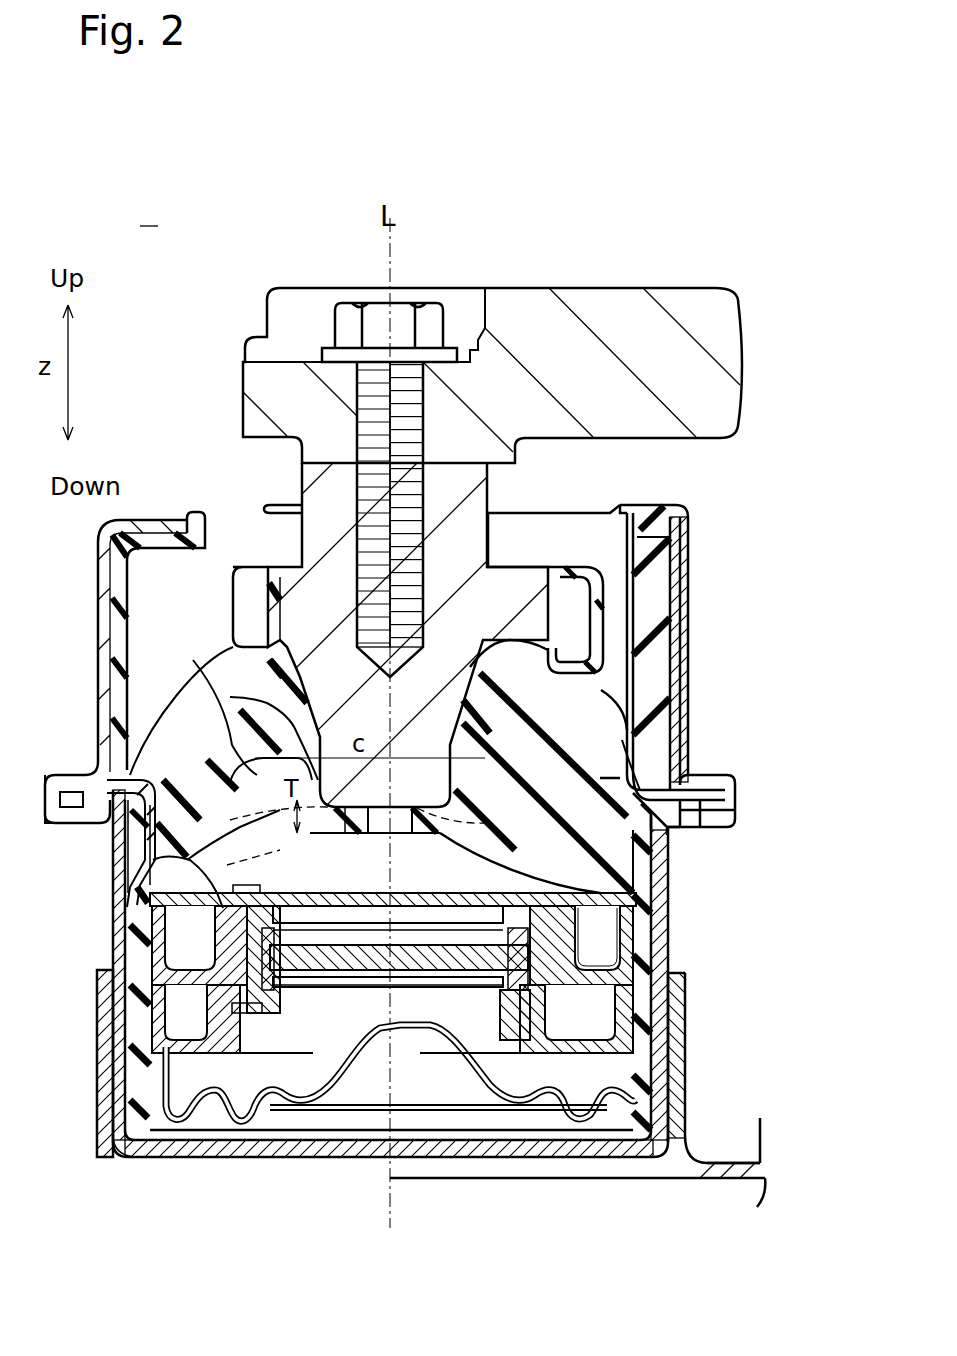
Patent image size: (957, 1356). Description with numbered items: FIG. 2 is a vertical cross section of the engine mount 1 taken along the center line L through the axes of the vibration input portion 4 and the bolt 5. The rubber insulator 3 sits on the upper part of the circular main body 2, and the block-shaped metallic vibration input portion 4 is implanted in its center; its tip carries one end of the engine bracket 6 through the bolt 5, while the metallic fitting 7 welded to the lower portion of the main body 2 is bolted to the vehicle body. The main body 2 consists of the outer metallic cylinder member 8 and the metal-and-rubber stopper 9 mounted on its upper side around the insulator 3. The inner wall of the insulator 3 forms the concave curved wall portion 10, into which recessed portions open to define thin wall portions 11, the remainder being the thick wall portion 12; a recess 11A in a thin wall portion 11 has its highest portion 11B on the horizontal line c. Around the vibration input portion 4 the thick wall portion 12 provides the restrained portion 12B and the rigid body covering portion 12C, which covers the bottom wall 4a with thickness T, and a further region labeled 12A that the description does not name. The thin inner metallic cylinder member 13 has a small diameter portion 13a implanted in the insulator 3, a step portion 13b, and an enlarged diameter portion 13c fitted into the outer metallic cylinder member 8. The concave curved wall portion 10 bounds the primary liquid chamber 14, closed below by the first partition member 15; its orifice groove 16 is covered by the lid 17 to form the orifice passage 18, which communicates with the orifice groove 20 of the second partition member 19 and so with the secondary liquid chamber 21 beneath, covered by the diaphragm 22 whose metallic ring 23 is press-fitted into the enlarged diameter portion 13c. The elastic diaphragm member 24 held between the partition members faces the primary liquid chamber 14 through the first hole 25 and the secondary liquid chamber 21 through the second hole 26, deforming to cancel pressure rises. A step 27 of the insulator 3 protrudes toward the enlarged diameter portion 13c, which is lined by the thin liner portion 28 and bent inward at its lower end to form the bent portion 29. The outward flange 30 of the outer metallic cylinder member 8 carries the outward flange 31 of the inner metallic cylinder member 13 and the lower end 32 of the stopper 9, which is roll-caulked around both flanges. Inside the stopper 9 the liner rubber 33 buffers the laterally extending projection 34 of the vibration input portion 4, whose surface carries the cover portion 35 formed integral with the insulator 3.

The engine mount 1 is at (232, 263).
The main body 2 is at (116, 1174).
The insulator 3 is at (223, 656).
The vibration input portion 4 is at (371, 584).
The bottom wall 4a is at (408, 813).
The bolt 5 is at (372, 315).
The engine bracket 6 is at (577, 303).
The metallic fitting 7 is at (738, 1173).
The outer metallic cylinder member 8 is at (120, 910).
The stopper 9 is at (684, 652).
The concave curved wall portion 10 is at (516, 857).
The thin wall portion 11 is at (274, 745).
The recess 11A is at (240, 842).
The most recessed, highest portion 11B is at (233, 748).
The thick wall portion 12 is at (605, 777).
The elastic covering on housing wall 12A is at (630, 750).
The restrained portion 12B is at (483, 750).
The rigid body covering portion 12C is at (360, 833).
The inner metallic cylinder member 13 is at (100, 787).
The small diameter portion 13a is at (653, 817).
The step portion 13b is at (633, 862).
The enlarged diameter portion 13c is at (653, 1013).
The primary liquid chamber 14 is at (183, 780).
The first partition member 15 is at (233, 947).
The orifice groove 16 is at (167, 950).
The lid 17 is at (137, 853).
The orifice passage 18 is at (600, 963).
The second partition member 19 is at (520, 993).
The orifice groove 20 is at (607, 1013).
The secondary liquid chamber 21 is at (283, 1033).
The diaphragm 22 is at (373, 1110).
The metallic ring 23 is at (153, 1085).
The elastic diaphragm member 24 is at (337, 967).
The first hole 25 is at (430, 894).
The second hole 26 is at (437, 990).
The step 27 is at (595, 910).
The liner portion 28 is at (143, 972).
The bent portion 29 is at (127, 1155).
The outward flange 30 is at (713, 807).
The outward flange 31 is at (687, 793).
The lower end 32 is at (725, 783).
The liner rubber 33 is at (643, 580).
The projection 34 is at (545, 590).
The cover portion 35 is at (595, 567).